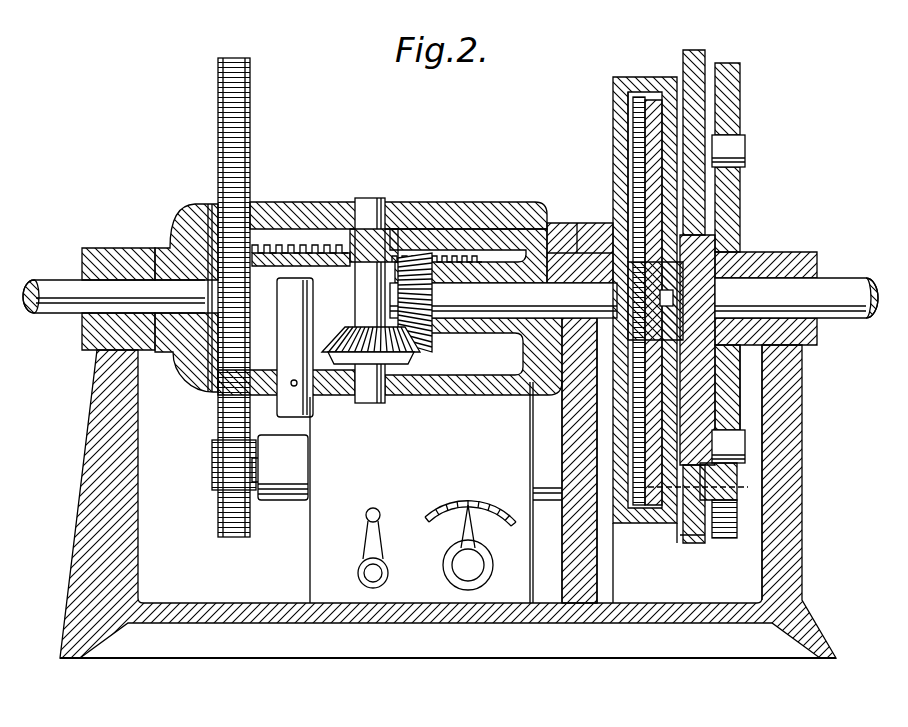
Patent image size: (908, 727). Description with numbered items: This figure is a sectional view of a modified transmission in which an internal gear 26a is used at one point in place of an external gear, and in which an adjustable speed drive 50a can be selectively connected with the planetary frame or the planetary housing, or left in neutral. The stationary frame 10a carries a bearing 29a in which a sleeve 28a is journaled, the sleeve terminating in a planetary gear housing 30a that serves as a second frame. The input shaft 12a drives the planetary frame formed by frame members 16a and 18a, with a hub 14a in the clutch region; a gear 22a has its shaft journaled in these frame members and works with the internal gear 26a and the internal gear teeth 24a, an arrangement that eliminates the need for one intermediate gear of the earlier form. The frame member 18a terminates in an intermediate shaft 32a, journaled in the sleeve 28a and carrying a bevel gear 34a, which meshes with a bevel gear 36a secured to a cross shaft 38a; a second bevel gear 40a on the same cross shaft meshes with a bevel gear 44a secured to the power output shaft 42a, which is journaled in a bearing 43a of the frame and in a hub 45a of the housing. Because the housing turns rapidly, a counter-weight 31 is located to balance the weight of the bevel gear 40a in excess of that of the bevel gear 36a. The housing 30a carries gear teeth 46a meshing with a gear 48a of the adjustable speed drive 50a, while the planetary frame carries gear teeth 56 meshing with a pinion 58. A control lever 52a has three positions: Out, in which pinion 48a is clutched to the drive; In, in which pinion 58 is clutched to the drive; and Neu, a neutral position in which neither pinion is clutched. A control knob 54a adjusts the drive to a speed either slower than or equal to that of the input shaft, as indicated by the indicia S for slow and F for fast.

The frame 10a is at (107, 482).
The input shaft 12a is at (838, 292).
The clutch hub 14a is at (716, 258).
The planetary frame member 16a is at (727, 220).
The planetary frame member 18a is at (628, 228).
The gear 22a is at (700, 70).
The internal gear 24a is at (647, 120).
The internal gear 26a is at (618, 92).
The sleeve 28a is at (590, 262).
The bearing 29a is at (560, 240).
The planetary gear housing 30a is at (410, 212).
The counter-weight 31 is at (295, 347).
The intermediate shaft 32a is at (503, 300).
The bevel gear 34a is at (424, 300).
The bevel gear 36a is at (338, 341).
The cross shaft 38a is at (370, 210).
The bevel gear 40a is at (455, 250).
The power output shaft 42a is at (52, 290).
The bearing 43a is at (115, 257).
The bevel gear 44a is at (272, 262).
The hub 45a is at (167, 248).
The gear teeth 46a is at (222, 530).
The gear 48a is at (213, 478).
The adjustable speed drive 50a is at (440, 452).
The control lever 52a is at (372, 555).
The control knob 54a is at (473, 528).
The gear teeth 56 is at (722, 537).
The pinion 58 is at (748, 490).